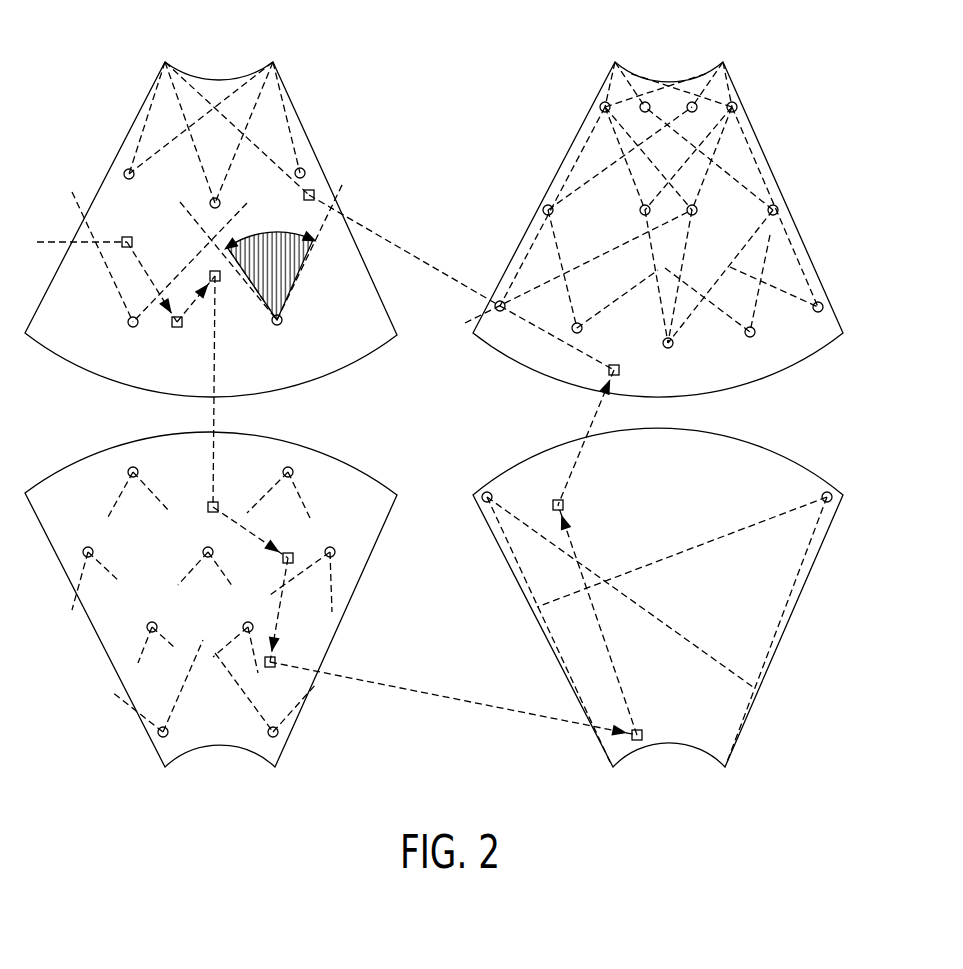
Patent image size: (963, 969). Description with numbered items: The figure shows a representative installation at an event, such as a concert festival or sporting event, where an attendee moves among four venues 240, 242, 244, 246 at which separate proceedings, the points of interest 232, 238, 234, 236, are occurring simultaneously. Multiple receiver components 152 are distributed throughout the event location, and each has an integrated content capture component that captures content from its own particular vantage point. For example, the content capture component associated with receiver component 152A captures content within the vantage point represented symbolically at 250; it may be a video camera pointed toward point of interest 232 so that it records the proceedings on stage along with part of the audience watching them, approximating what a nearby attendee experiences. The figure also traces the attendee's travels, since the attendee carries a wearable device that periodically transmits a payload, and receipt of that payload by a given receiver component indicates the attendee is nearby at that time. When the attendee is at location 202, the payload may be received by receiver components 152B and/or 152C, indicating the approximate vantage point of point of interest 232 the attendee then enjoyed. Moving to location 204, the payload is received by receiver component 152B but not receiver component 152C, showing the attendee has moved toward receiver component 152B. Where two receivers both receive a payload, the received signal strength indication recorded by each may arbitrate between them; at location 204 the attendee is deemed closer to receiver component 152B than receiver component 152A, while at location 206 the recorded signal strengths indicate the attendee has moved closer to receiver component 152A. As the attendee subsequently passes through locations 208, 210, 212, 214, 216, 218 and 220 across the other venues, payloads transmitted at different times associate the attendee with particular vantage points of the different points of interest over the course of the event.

The receiver component 152 is at (304, 173).
The receiver component 152A is at (275, 325).
The receiver component 152B is at (132, 327).
The receiver component 152C is at (126, 173).
The location 202 is at (127, 236).
The location 204 is at (175, 330).
The location 206 is at (220, 287).
The location 208 is at (216, 502).
The location 210 is at (293, 555).
The location 212 is at (277, 658).
The location 214 is at (645, 733).
The location 216 is at (565, 507).
The location 218 is at (617, 363).
The location 220 is at (304, 194).
The point of interest 232 is at (262, 36).
The point of interest 234 is at (262, 790).
The point of interest 236 is at (712, 792).
The point of interest 238 is at (710, 42).
The venue 240 is at (353, 367).
The venue 242 is at (807, 360).
The venue 244 is at (350, 598).
The venue 246 is at (800, 590).
The vantage point 250 is at (290, 260).